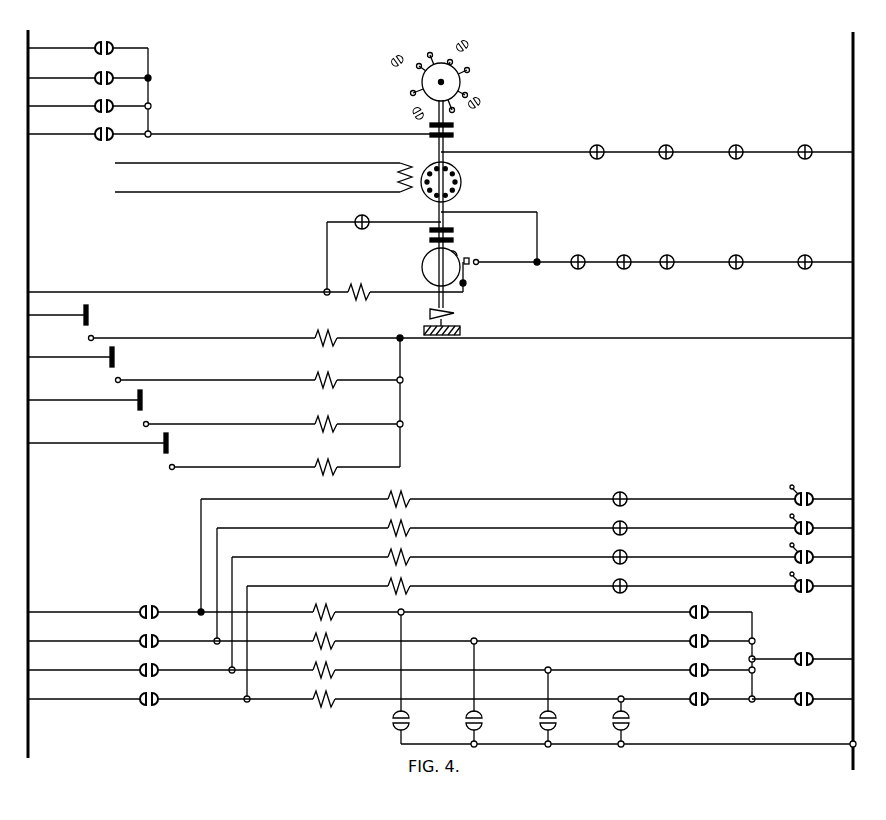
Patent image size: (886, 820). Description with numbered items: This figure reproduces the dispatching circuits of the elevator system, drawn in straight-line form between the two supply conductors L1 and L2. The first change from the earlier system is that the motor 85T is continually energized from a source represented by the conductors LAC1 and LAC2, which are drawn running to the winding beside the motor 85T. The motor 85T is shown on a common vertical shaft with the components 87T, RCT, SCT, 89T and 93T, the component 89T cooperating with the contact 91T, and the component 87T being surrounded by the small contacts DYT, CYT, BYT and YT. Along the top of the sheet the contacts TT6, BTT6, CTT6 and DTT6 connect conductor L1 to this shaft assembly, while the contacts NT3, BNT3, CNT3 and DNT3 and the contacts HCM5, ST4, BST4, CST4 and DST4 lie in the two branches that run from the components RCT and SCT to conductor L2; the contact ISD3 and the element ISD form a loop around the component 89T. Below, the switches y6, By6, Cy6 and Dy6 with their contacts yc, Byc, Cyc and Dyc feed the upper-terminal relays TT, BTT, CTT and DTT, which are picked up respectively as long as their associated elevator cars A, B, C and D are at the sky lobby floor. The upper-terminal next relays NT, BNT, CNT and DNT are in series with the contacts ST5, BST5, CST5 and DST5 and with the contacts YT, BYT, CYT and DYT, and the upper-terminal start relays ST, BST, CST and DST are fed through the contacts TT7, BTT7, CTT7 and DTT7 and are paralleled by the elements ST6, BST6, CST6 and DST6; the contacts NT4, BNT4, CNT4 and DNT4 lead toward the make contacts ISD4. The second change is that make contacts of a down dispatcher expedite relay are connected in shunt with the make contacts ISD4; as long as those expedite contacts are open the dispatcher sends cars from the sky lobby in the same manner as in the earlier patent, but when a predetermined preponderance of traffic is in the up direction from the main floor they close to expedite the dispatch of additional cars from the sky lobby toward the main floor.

The supply line L1 is at (30, 40).
The supply line L2 is at (851, 48).
The relay contact TT6 is at (97, 44).
The relay contact BTT6 is at (97, 74).
The relay contact CTT6 is at (97, 102).
The relay contact DTT6 is at (97, 130).
The conductor LAC1 is at (118, 165).
The conductor LAC2 is at (122, 194).
The cam switch 87T is at (462, 84).
The contact DYT is at (392, 66).
The contact CYT is at (470, 48).
The contact BYT is at (483, 103).
The contact YT is at (410, 113).
The clutch RCT is at (446, 140).
The motor 85T is at (462, 184).
The contact NT3 is at (603, 141).
The contact BNT3 is at (667, 160).
The contact CNT3 is at (744, 137).
The contact DNT3 is at (806, 160).
The contact ISD3 is at (356, 219).
The clutch SCT is at (447, 228).
The cam 89T is at (425, 258).
The cam follower contact 91T is at (471, 257).
The resistor ISD is at (360, 280).
The contact HCM5 is at (580, 270).
The contact ST4 is at (630, 248).
The contact BST4 is at (668, 270).
The contact CST4 is at (742, 247).
The contact DST4 is at (806, 270).
The ground/brake 93T is at (429, 312).
The switch y6 is at (99, 314).
The switch contact yc is at (94, 340).
The switch By6 is at (130, 354).
The switch contact Byc is at (121, 382).
The switch Cy6 is at (159, 396).
The switch contact Cyc is at (149, 425).
The switch Dy6 is at (186, 440).
The switch contact Dyc is at (175, 467).
The upper-terminal relay TT is at (324, 327).
The upper-terminal relay BTT is at (333, 375).
The upper-terminal relay CTT is at (333, 419).
The upper-terminal relay DTT is at (333, 461).
The upper-terminal next relay NT is at (406, 496).
The relay coil BNT is at (406, 525).
The relay coil CNT is at (406, 554).
The relay coil DNT is at (406, 583).
The contact ST5 is at (623, 493).
The contact BST5 is at (623, 522).
The contact CST5 is at (623, 551).
The contact DST5 is at (623, 580).
The relay contact TT7 is at (140, 607).
The relay contact BTT7 is at (140, 636).
The relay contact CTT7 is at (140, 665).
The relay contact DTT7 is at (140, 694).
The upper-terminal start relay ST is at (331, 608).
The relay coil BST is at (331, 637).
The relay coil CST is at (331, 666).
The relay coil DST is at (331, 695).
The relay contact NT4 is at (690, 609).
The relay contact BNT4 is at (690, 638).
The relay contact CNT4 is at (690, 667).
The relay contact DNT4 is at (690, 696).
The make contacts ISD4 is at (812, 646).
The capacitor ST6 is at (392, 723).
The capacitor BST6 is at (465, 716).
The capacitor CST6 is at (540, 716).
The capacitor DST6 is at (613, 716).